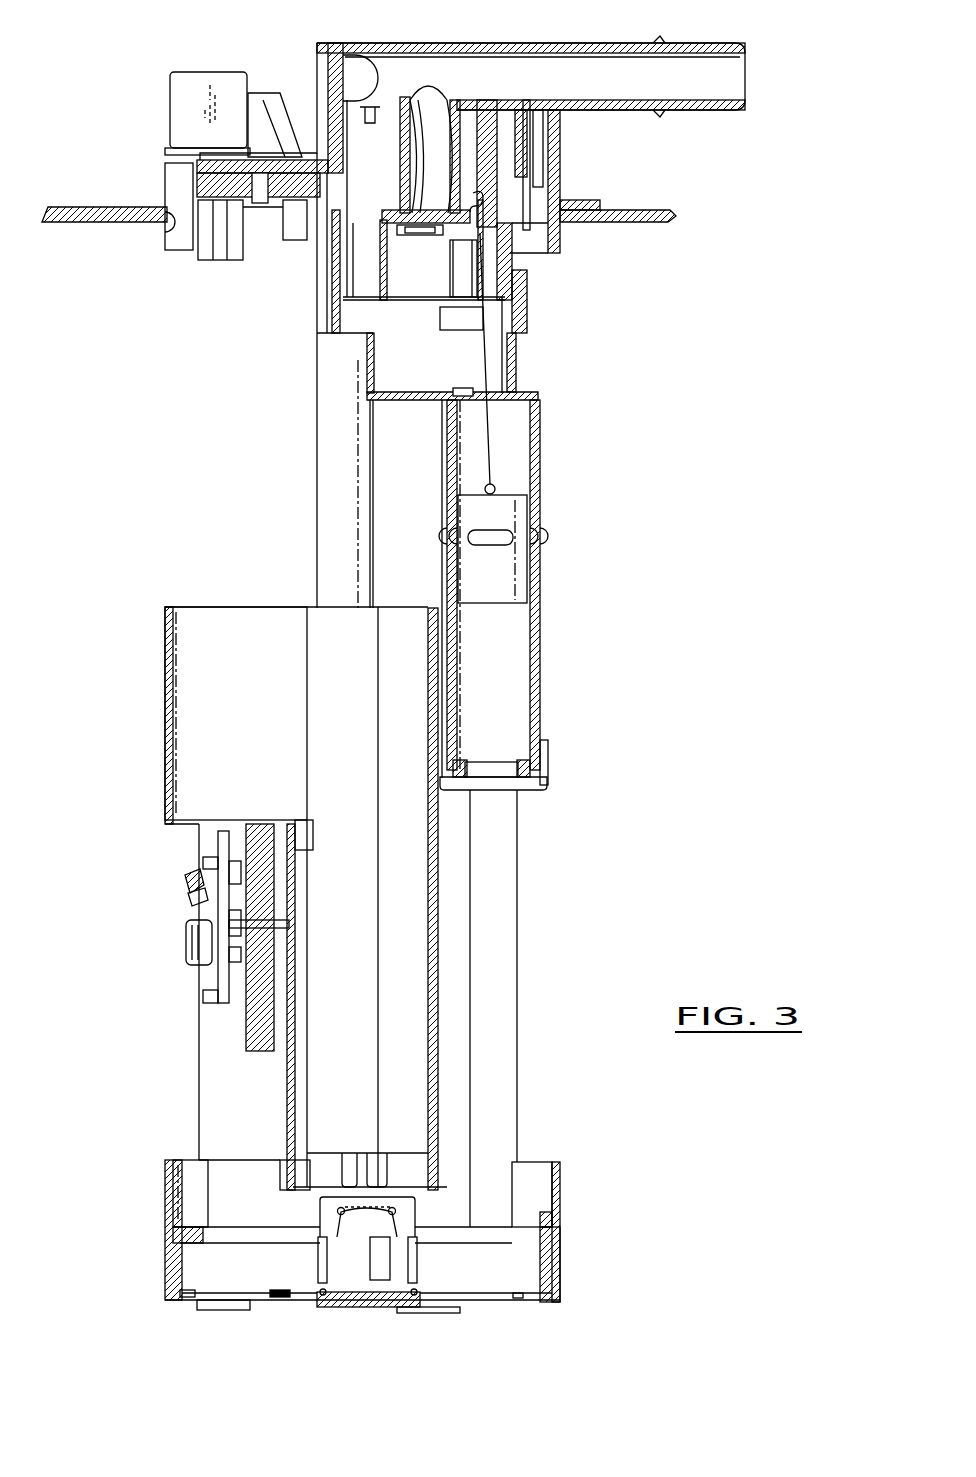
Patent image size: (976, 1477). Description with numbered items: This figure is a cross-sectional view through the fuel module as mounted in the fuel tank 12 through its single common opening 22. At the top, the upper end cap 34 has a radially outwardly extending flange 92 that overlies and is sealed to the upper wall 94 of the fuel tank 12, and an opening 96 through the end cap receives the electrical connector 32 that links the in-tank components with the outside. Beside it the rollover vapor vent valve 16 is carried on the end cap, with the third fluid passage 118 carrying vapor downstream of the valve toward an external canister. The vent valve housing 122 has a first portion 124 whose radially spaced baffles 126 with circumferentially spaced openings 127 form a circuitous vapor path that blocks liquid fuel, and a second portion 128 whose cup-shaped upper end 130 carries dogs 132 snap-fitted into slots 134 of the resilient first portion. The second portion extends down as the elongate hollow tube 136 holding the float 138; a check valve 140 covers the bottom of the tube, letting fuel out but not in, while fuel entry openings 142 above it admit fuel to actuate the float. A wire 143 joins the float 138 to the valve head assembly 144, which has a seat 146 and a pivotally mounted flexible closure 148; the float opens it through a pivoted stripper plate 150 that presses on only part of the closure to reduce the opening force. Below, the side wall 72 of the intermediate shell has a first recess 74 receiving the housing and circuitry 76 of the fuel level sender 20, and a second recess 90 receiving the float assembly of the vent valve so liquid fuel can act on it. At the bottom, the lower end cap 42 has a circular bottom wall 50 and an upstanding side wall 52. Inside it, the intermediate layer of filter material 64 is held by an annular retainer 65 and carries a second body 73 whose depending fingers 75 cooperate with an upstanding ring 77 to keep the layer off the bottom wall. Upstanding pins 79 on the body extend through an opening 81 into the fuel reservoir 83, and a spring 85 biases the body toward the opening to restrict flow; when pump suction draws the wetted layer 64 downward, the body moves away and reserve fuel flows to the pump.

The fuel tank 12 is at (68, 204).
The rollover vapor vent valve 16 is at (407, 248).
The fuel level sender 20 is at (174, 905).
The opening 22 is at (168, 233).
The electrical connector 32 is at (215, 72).
The upper end cap 34 is at (562, 152).
The lower end cap 42 is at (562, 1272).
The bottom wall 50 is at (275, 1312).
The side wall 52 is at (165, 1258).
The intermediate layer of filter material 64 is at (207, 1243).
The annular retainer 65 is at (545, 1227).
The side wall 72 is at (162, 652).
The second body 73 is at (434, 1236).
The first recess 74 is at (200, 1043).
The depending fingers 75 is at (415, 1275).
The circuitry 76 is at (190, 936).
The upstanding ring 77 is at (383, 1307).
The upstanding pins 79 is at (345, 1158).
The opening 81 is at (388, 1158).
The fuel reservoir 83 is at (405, 1052).
The spring 85 is at (337, 1262).
The second recess 90 is at (487, 870).
The flange 92 is at (133, 205).
The upper wall 94 is at (660, 224).
The opening 96 is at (262, 162).
The third fluid passage 118 is at (540, 43).
The housing 122 is at (532, 307).
The first portion 124 is at (507, 262).
The baffles 126 is at (328, 213).
The openings 127 is at (484, 254).
The second portion 128 is at (520, 362).
The cup-shaped upper end 130 is at (367, 382).
The dogs 132 is at (330, 307).
The slots 134 is at (333, 297).
The tube 136 is at (540, 488).
The float 138 is at (510, 570).
The check valve 140 is at (548, 772).
The fuel entry openings 142 is at (445, 538).
The wire 143 is at (490, 448).
The valve head assembly 144 is at (468, 185).
The seat 146 is at (450, 101).
The closure 148 is at (412, 108).
The stripper plate 150 is at (453, 310).